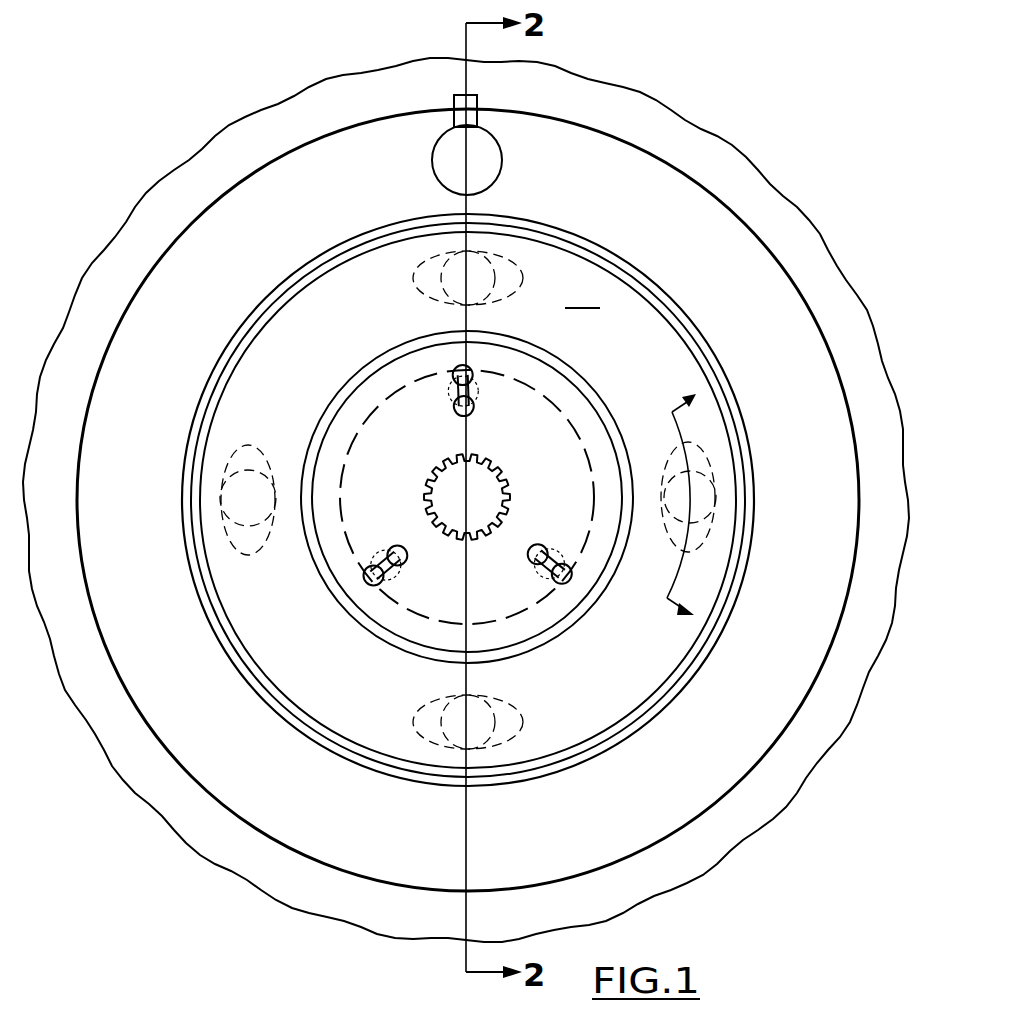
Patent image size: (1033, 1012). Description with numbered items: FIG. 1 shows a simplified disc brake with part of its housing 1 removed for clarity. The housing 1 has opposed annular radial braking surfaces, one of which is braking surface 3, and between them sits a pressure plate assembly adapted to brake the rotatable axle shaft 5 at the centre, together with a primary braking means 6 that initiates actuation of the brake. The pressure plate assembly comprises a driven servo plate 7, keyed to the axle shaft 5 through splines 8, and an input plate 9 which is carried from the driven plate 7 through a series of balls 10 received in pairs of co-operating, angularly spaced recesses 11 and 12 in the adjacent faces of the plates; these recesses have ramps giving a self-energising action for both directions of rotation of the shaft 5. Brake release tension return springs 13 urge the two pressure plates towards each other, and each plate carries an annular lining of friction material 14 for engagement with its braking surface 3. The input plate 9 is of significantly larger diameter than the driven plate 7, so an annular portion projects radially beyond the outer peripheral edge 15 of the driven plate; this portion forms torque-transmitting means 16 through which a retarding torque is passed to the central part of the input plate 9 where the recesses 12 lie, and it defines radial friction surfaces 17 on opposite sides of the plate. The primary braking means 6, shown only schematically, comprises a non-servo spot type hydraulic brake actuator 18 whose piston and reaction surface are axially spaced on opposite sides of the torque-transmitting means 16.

The housing 1 is at (641, 112).
The braking surface 3 is at (620, 255).
The axle shaft 5 is at (461, 512).
The primary braking means 6 is at (440, 140).
The driven servo plate 7 is at (612, 690).
The splines 8 is at (497, 463).
The input plate 9 is at (345, 400).
The balls 10 is at (236, 494).
The recess 11 is at (236, 452).
The recess 12 is at (416, 718).
The brake release tension return springs 13 is at (378, 555).
The annular lining of friction material 14 is at (509, 281).
The outer peripheral edge 15 is at (742, 470).
The torque-transmitting means 16 is at (758, 270).
The radial friction surfaces 17 is at (798, 323).
The hydraulic brake actuator 18 is at (483, 140).